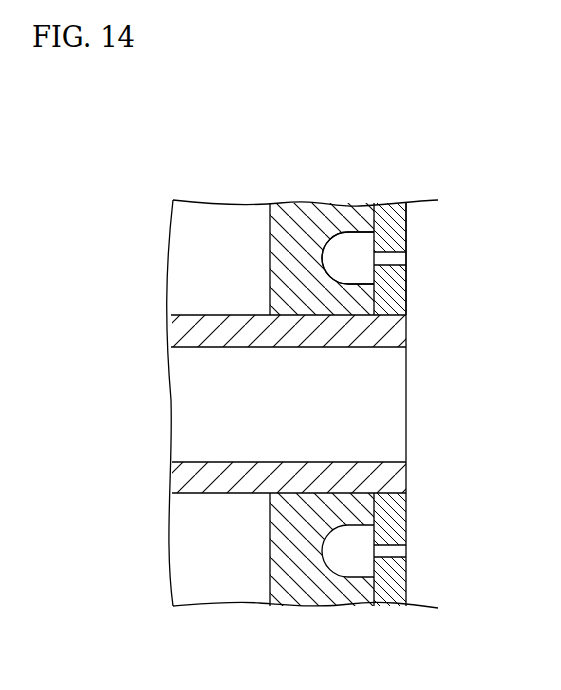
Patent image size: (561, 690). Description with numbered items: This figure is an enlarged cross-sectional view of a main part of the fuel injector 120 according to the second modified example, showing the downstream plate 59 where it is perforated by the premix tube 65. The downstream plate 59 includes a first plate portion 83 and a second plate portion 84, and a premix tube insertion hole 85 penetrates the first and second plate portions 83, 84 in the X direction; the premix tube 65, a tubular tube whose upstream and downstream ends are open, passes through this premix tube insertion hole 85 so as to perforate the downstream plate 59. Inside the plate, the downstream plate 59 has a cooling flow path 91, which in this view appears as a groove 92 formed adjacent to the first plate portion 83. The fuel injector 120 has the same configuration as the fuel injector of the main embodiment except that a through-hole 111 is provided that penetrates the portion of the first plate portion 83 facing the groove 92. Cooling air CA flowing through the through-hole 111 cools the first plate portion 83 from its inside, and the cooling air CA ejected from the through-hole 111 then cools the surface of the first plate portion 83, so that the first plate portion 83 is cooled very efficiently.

The fuel injector 120 is at (165, 111).
The premix tube 65 is at (169, 331).
The second plate portion 84 is at (290, 232).
The premix tube insertion hole 85 is at (397, 329).
The first plate portion 83 is at (397, 290).
The cooling flow path 91 is at (353, 250).
The groove 92 is at (342, 203).
The through-hole 111 is at (384, 252).
The cooling air CA is at (413, 258).
The downstream plate 59 is at (409, 214).